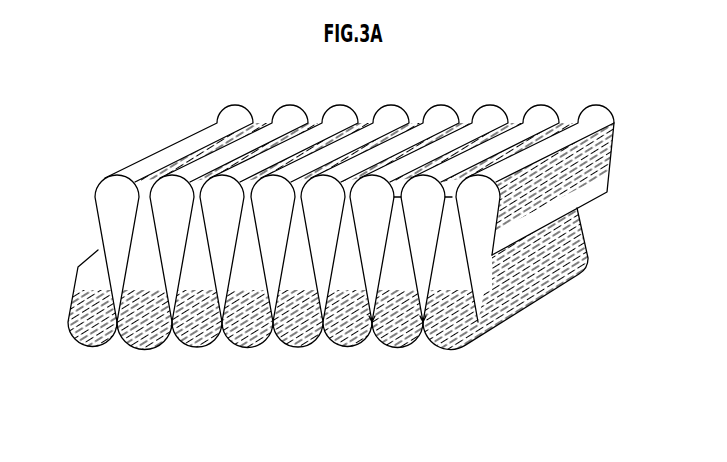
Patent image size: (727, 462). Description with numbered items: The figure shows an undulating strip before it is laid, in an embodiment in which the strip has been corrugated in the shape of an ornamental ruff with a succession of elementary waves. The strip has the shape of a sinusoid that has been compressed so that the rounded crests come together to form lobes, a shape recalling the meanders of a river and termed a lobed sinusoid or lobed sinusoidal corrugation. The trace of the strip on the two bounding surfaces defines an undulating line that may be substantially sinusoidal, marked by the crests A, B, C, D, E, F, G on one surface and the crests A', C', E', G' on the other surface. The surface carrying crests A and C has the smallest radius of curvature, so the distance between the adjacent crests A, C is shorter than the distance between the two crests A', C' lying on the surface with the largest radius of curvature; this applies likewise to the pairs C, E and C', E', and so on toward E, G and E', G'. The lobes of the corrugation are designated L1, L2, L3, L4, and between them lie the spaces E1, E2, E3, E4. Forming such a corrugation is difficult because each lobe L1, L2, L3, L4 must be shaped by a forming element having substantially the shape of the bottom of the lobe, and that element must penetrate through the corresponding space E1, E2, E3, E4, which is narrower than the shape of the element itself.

The crest A is at (117, 222).
The crest A' is at (179, 117).
The crest B is at (141, 353).
The crest C is at (172, 248).
The crest C' is at (234, 117).
The crest D is at (195, 353).
The crest E is at (222, 248).
The crest E' is at (284, 119).
The crest F is at (246, 353).
The crest G is at (273, 248).
The crest G' is at (335, 119).
The lobe L1 is at (372, 248).
The lobe L2 is at (397, 327).
The lobe L3 is at (423, 248).
The lobe L4 is at (505, 279).
The space E1 is at (372, 332).
The space E2 is at (400, 203).
The space E3 is at (423, 332).
The space E4 is at (450, 203).